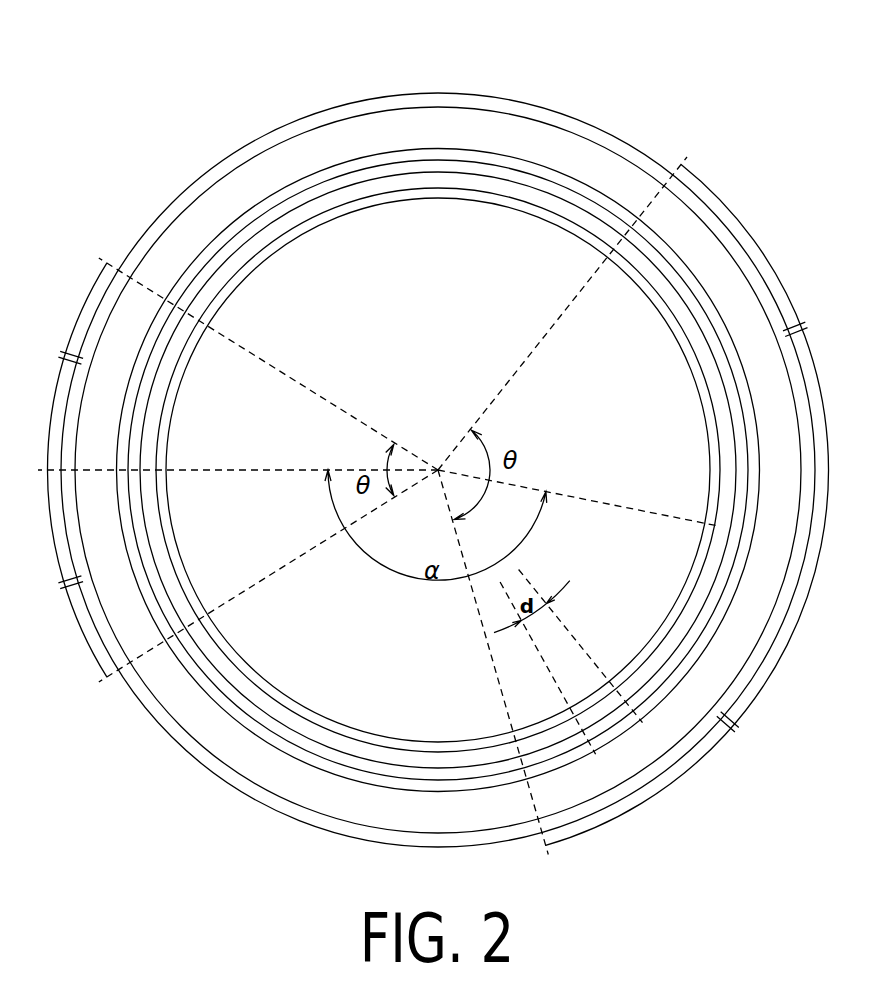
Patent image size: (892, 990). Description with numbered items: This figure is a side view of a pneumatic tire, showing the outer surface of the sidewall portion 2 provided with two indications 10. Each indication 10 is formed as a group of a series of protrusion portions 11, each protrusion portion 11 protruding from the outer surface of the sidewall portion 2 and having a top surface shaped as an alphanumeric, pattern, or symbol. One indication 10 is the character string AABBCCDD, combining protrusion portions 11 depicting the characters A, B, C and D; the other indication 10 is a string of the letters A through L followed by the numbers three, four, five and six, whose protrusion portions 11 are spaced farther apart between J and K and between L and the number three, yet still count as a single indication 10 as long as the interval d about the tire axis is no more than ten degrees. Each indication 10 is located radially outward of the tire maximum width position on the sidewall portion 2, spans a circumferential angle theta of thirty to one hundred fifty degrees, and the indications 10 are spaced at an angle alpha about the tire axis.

The sidewall portion 2 is at (541, 95).
The indication 10 is at (118, 497).
The protrusion portion 11 is at (130, 360).